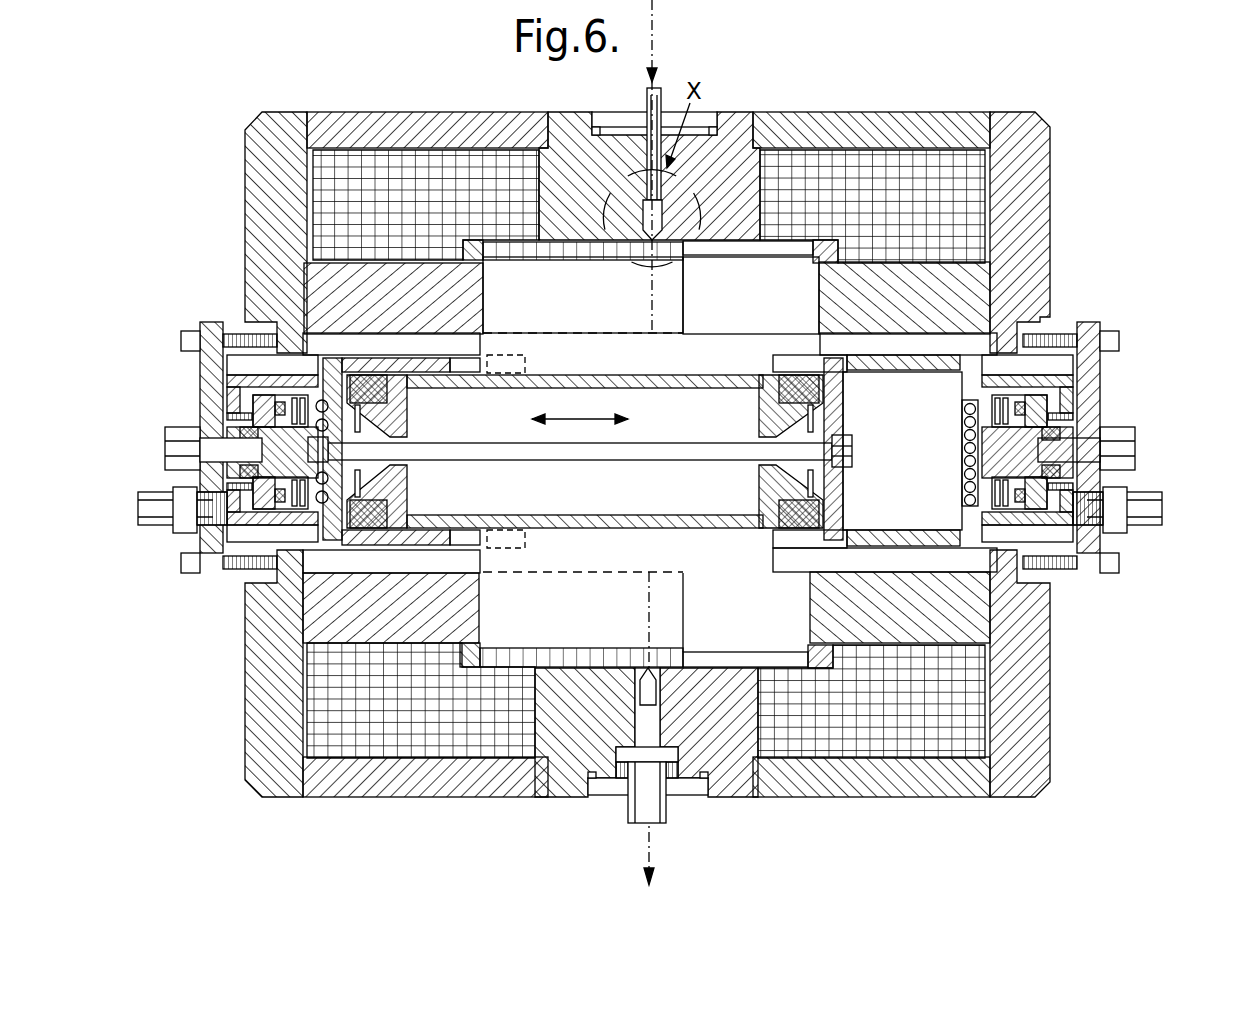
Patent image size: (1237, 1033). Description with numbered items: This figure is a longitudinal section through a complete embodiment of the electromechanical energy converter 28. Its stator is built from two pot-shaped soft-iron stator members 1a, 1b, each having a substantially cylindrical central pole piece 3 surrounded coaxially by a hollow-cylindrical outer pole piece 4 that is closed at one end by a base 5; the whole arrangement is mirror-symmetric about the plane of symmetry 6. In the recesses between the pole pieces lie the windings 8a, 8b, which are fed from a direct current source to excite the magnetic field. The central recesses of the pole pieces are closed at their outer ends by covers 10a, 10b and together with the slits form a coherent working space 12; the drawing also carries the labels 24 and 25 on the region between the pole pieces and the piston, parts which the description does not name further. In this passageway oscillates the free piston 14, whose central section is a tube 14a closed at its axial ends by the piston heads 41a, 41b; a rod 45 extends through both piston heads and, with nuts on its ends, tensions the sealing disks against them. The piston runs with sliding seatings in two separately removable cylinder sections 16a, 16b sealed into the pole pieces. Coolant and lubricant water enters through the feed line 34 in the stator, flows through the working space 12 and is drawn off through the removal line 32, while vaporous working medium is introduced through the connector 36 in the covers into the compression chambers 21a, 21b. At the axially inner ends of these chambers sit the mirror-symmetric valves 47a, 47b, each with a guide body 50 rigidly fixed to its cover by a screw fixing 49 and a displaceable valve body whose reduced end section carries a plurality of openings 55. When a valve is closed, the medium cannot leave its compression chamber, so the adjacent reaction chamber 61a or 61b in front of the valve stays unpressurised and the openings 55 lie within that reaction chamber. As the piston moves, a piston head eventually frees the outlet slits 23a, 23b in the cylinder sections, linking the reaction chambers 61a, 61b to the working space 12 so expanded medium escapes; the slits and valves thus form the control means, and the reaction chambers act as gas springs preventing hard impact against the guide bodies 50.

The stator member 1a is at (432, 112).
The stator member 1b is at (834, 103).
The central pole piece 3 is at (313, 284).
The outer pole piece 4 is at (318, 116).
The base 5 is at (263, 174).
The plane of symmetry 6 is at (656, 10).
The winding 8a is at (385, 162).
The winding 8b is at (922, 157).
The cover 10a is at (200, 380).
The cover 10b is at (1080, 368).
The working space 12 is at (618, 370).
The piston 14 is at (715, 558).
The tube 14a is at (675, 385).
The cylinder section 16a is at (336, 530).
The cylinder section 16b is at (890, 538).
The compression chamber 21a is at (238, 566).
The compression chamber 21b is at (1076, 575).
The outlet slits 23a is at (490, 553).
The outlet slits 23b is at (803, 545).
The air gap 24 is at (673, 300).
The magnet plate 25 is at (578, 250).
The converter 28 is at (1068, 113).
The removal line 32 is at (652, 793).
The feed line 34 is at (647, 96).
The connector 36 is at (1140, 511).
The piston head 41a is at (393, 513).
The piston head 41b is at (792, 475).
The rod 45 is at (600, 453).
The valve 47a is at (277, 448).
The valve 47b is at (1003, 448).
The screw fixing 49 is at (185, 446).
The guide body 50 is at (1063, 443).
The openings 55 is at (964, 468).
The reaction chamber 61a is at (327, 493).
The reaction chamber 61b is at (918, 485).